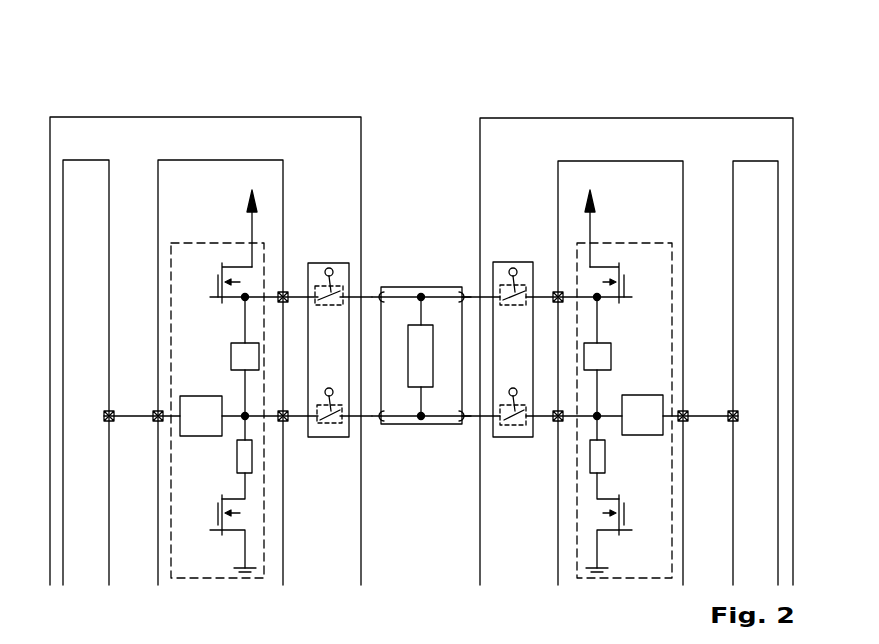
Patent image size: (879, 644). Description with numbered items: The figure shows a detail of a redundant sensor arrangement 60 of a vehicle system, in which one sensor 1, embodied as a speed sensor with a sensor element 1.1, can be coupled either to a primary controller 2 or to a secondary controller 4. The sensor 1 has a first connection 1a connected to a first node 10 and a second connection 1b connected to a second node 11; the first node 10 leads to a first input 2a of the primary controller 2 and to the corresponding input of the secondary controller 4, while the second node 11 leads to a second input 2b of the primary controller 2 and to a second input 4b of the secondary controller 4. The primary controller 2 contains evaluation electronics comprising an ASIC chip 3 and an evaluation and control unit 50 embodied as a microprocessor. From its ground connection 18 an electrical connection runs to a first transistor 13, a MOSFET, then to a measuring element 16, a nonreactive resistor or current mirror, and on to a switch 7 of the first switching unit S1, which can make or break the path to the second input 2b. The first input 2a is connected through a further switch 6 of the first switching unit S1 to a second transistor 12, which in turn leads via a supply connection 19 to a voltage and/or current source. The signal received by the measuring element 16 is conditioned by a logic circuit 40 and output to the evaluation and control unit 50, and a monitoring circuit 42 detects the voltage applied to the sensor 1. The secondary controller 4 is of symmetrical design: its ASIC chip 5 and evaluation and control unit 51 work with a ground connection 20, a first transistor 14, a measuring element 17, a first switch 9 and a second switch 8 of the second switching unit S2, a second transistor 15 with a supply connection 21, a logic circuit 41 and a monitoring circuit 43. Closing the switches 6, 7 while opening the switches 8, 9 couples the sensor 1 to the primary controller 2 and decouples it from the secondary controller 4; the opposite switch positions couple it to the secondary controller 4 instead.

The redundant sensor arrangement 60 is at (578, 90).
The primary controller 2 is at (223, 117).
The evaluation and control unit 50 is at (85, 160).
The ASIC chip 3 is at (275, 160).
The secondary controller 4 is at (619, 118).
The ASIC chip 5 is at (565, 161).
The evaluation and control unit 51 is at (757, 161).
The supply connection 19 is at (251, 217).
The supply connection 21 is at (591, 217).
The second transistor 12 is at (217, 286).
The first transistor 13 is at (217, 515).
The first transistor 14 is at (625, 515).
The second transistor 15 is at (625, 286).
The measuring element 16 is at (252, 455).
The measuring element 17 is at (590, 455).
The ground connection 18 is at (245, 552).
The ground connection 20 is at (597, 552).
The logic circuit 40 is at (180, 405).
The logic circuit 41 is at (663, 405).
The monitoring circuit 42 is at (231, 360).
The monitoring circuit 43 is at (611, 360).
The first switching unit S1 is at (335, 262).
The second switching unit S2 is at (505, 262).
The switch 6 is at (323, 283).
The switch 7 is at (334, 421).
The second switch 8 is at (520, 283).
The first switch 9 is at (508, 425).
The sensor 1 is at (419, 360).
The first connection 1a is at (423, 324).
The second connection 1b is at (418, 392).
The sensor element 1.1 is at (436, 350).
The first input 2a is at (380, 290).
The second input 2b is at (382, 424).
The second input 4b is at (438, 424).
The first node 10 is at (418, 290).
The second node 11 is at (416, 412).